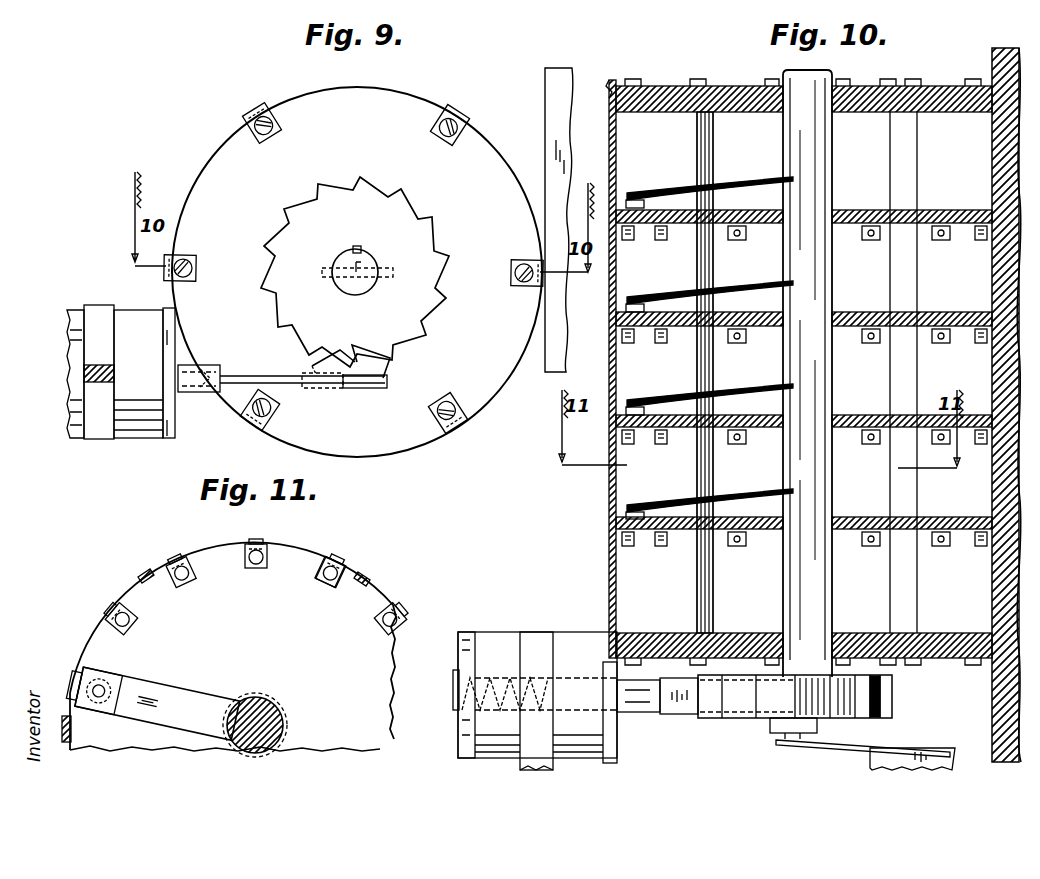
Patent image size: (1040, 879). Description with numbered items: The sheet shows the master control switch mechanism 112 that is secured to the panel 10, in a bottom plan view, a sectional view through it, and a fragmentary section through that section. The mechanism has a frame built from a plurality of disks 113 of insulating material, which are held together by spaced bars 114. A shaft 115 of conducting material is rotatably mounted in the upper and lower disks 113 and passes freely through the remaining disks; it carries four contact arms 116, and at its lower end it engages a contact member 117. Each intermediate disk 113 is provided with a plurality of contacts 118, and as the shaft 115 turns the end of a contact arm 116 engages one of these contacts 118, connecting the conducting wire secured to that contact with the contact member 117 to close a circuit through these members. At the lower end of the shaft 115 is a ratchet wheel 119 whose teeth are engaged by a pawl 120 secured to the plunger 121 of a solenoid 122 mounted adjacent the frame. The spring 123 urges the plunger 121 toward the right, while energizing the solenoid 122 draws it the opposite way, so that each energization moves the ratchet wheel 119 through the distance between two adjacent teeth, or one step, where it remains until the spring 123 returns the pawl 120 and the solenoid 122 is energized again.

In FIG. 10, the panel 10 is at (560, 108).
In FIG. 9, the master control switch mechanism 112 is at (395, 455).
In FIG. 10, the master control switch mechanism 112 is at (599, 516).
In FIG. 9, the disks 113 is at (225, 141).
In FIG. 11, the disks 113 is at (311, 663).
In FIG. 10, the disks 113 is at (925, 110).
In FIG. 9, the bars 114 is at (458, 112).
In FIG. 11, the bars 114 is at (152, 566).
In FIG. 10, the bars 114 is at (697, 262).
In FIG. 9, the shaft 115 is at (365, 280).
In FIG. 11, the shaft 115 is at (282, 728).
In FIG. 10, the shaft 115 is at (806, 371).
In FIG. 11, the contact arms 116 is at (186, 705).
In FIG. 10, the contact arms 116 is at (730, 497).
In FIG. 10, the contact member 117 is at (820, 748).
In FIG. 11, the contacts 118 is at (332, 575).
In FIG. 10, the contacts 118 is at (870, 445).
In FIG. 9, the ratchet wheel 119 is at (430, 250).
In FIG. 10, the ratchet wheel 119 is at (895, 690).
In FIG. 9, the pawl 120 is at (393, 380).
In FIG. 9, the plunger 121 is at (210, 368).
In FIG. 10, the plunger 121 is at (645, 700).
In FIG. 9, the solenoid 122 is at (140, 325).
In FIG. 10, the solenoid 122 is at (577, 648).
In FIG. 10, the spring 123 is at (486, 645).